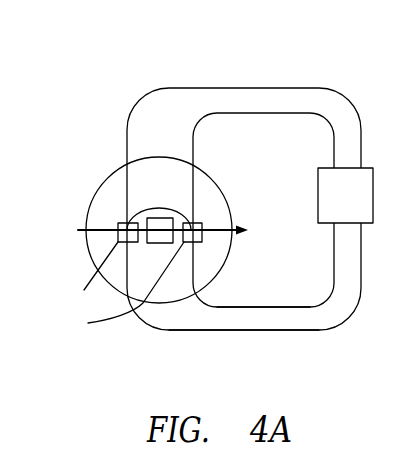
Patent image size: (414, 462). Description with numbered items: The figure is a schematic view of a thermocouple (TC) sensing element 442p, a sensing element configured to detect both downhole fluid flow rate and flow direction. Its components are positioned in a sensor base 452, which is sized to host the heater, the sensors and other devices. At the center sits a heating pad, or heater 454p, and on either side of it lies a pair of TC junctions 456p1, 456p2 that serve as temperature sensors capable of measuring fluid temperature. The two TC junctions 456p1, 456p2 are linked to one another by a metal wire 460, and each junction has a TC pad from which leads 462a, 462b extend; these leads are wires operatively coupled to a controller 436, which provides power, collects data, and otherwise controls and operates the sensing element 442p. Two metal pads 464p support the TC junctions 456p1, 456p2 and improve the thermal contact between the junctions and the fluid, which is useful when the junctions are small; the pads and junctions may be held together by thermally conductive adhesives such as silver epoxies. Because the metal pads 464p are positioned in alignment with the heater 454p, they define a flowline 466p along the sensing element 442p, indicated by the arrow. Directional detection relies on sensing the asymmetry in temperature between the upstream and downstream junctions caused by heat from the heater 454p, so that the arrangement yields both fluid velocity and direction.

The thermocouple sensing element 442p is at (98, 28).
The lead 462a is at (193, 88).
The lead 462b is at (246, 330).
The sensor base 452 is at (225, 200).
The metal wire 460 is at (138, 212).
The heating pad 454p is at (158, 217).
The metal pads 464p is at (118, 223).
The flowline 466p is at (79, 230).
The first TC junction 456p1 is at (75, 273).
The second TC junction 456p2 is at (108, 294).
The controller 436 is at (362, 207).